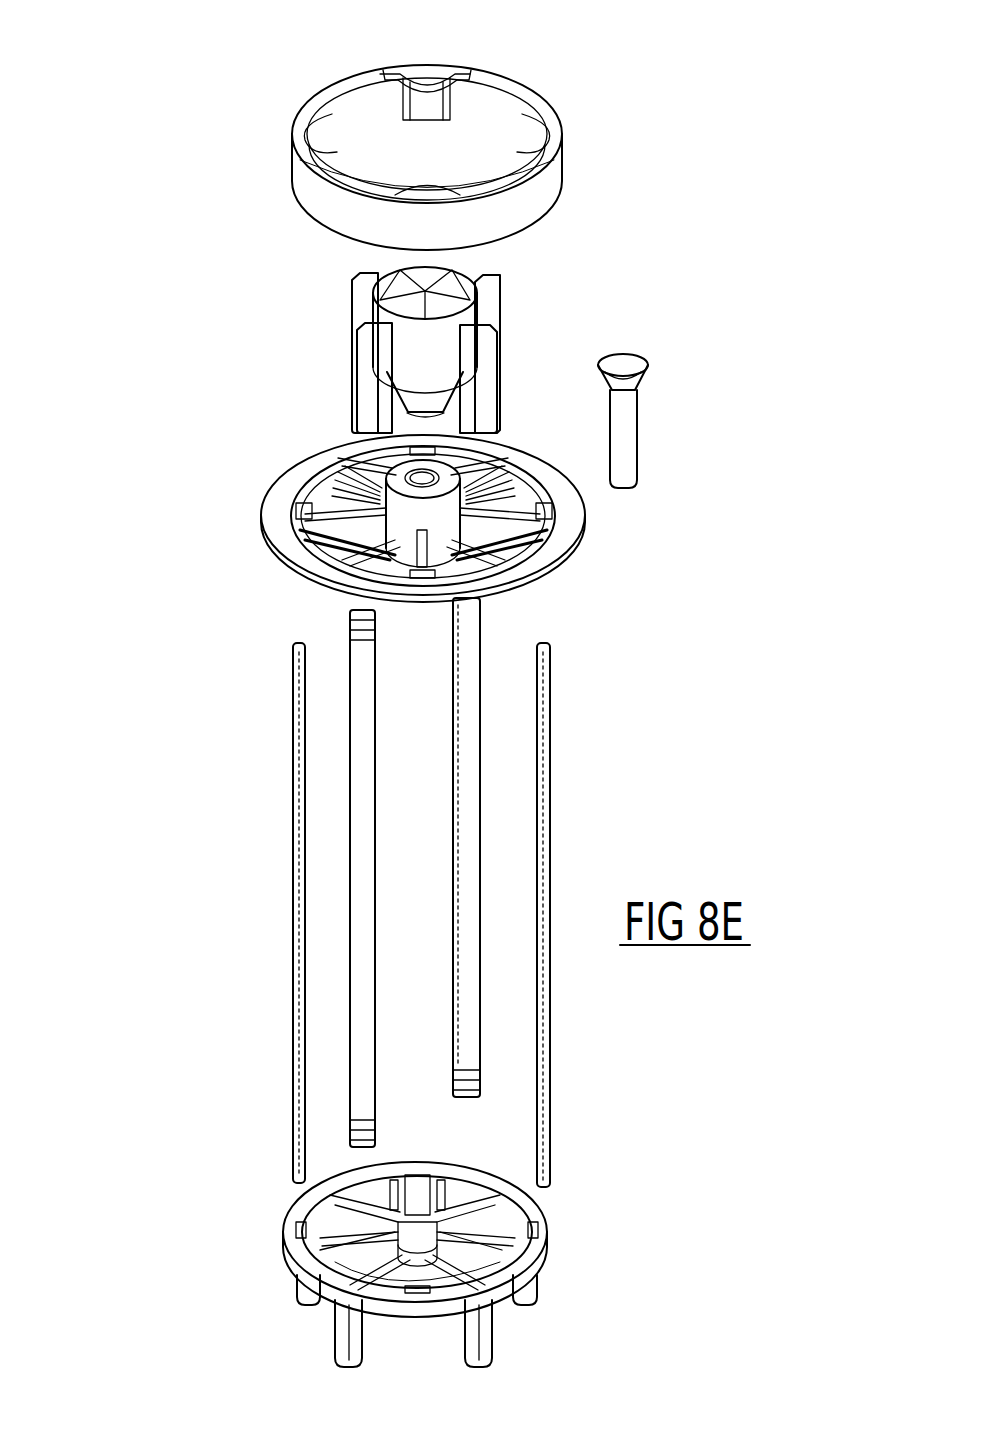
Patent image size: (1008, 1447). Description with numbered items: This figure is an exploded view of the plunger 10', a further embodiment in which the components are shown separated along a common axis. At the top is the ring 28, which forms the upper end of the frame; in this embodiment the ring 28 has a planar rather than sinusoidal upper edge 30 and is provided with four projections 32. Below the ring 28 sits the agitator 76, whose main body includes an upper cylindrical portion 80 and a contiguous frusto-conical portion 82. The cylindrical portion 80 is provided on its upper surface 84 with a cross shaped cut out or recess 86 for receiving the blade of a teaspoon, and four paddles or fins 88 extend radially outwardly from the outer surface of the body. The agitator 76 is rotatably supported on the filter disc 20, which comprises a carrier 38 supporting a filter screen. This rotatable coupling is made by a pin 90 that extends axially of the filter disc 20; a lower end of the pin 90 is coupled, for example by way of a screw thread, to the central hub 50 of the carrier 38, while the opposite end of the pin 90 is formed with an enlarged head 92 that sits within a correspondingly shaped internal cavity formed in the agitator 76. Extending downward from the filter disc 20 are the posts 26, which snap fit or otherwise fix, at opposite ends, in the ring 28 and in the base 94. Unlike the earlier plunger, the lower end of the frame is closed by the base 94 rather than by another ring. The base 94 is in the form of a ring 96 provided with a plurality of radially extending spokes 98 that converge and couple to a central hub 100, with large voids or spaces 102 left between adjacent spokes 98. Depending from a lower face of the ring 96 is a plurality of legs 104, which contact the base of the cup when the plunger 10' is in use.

The plunger 10' is at (794, 612).
The filter disc 20 is at (349, 520).
The posts 26 is at (530, 818).
The ring 28 is at (545, 172).
The upper edge 30 is at (525, 90).
The projections 32 is at (427, 75).
The carrier 38 is at (313, 545).
The central hub 50 is at (390, 503).
The agitator 76 is at (412, 321).
The upper cylindrical portion 80 is at (378, 317).
The frusto-conical portion 82 is at (413, 390).
The upper surface 84 is at (463, 291).
The cross shaped cut out or recess 86 is at (395, 282).
The paddles or fins 88 is at (370, 350).
The pin 90 is at (623, 438).
The enlarged head 92 is at (638, 375).
The base 94 is at (380, 1225).
The ring 96 is at (415, 1303).
The spokes 98 is at (503, 1230).
The central hub 100 is at (417, 1228).
The voids or spaces 102 is at (435, 1205).
The legs 104 is at (350, 1362).